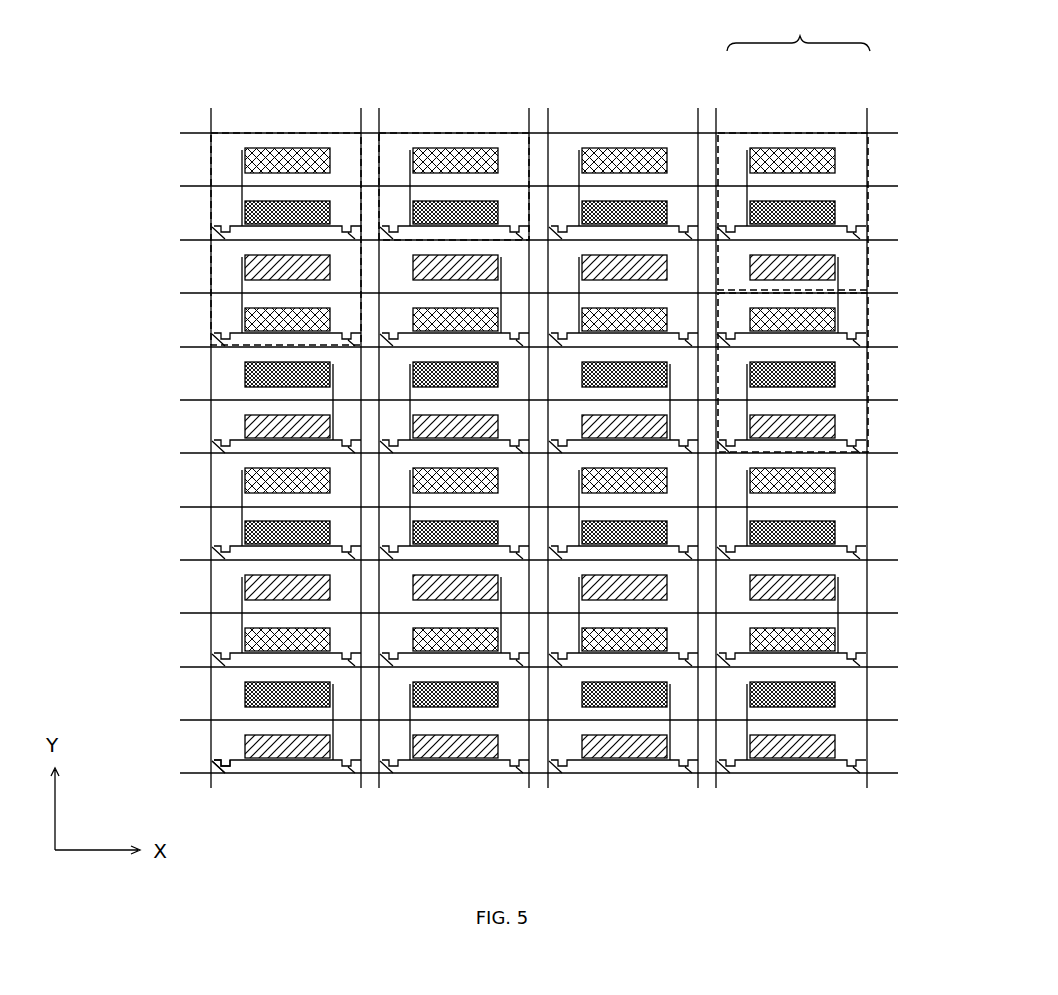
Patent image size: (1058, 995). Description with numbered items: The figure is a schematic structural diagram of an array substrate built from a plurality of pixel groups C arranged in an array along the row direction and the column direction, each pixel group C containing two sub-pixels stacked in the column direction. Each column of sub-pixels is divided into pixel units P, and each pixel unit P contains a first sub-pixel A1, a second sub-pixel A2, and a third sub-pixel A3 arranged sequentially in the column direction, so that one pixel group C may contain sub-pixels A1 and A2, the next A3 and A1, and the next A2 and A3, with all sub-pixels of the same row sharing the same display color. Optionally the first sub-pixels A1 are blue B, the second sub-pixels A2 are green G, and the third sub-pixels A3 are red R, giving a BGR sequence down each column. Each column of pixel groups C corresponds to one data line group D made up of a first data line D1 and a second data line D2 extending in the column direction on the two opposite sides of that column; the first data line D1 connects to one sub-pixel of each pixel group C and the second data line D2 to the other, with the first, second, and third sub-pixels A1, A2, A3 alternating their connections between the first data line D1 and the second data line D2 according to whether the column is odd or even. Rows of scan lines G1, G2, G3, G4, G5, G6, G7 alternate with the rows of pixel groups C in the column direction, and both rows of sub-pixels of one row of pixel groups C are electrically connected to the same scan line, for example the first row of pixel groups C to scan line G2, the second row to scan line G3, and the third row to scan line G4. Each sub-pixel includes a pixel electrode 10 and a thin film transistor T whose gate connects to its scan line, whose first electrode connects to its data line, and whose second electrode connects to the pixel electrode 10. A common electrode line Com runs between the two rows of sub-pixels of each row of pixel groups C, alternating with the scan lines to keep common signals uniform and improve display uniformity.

The first row of scan line G1 is at (518, 132).
The second row of scan line G2 is at (518, 239).
The third row of scan line G3 is at (518, 346).
The fourth row of scan line G4 is at (518, 452).
The scan line G5 is at (518, 559).
The scan line G6 is at (518, 666).
The scan line G7 is at (518, 772).
The common electrode line Com is at (509, 452).
The first data line D1 is at (716, 104).
The second data line D2 is at (871, 100).
The pixel group C is at (275, 133).
The pixel unit P is at (868, 197).
The data line group D is at (798, 29).
The first sub-pixel A1 is at (299, 399).
The second sub-pixel A2 is at (299, 454).
The third sub-pixel A3 is at (299, 506).
The blue B is at (835, 160).
The green G is at (835, 213).
The red R is at (838, 265).
The thin film transistor T is at (243, 763).
The pixel electrode 10 is at (305, 755).